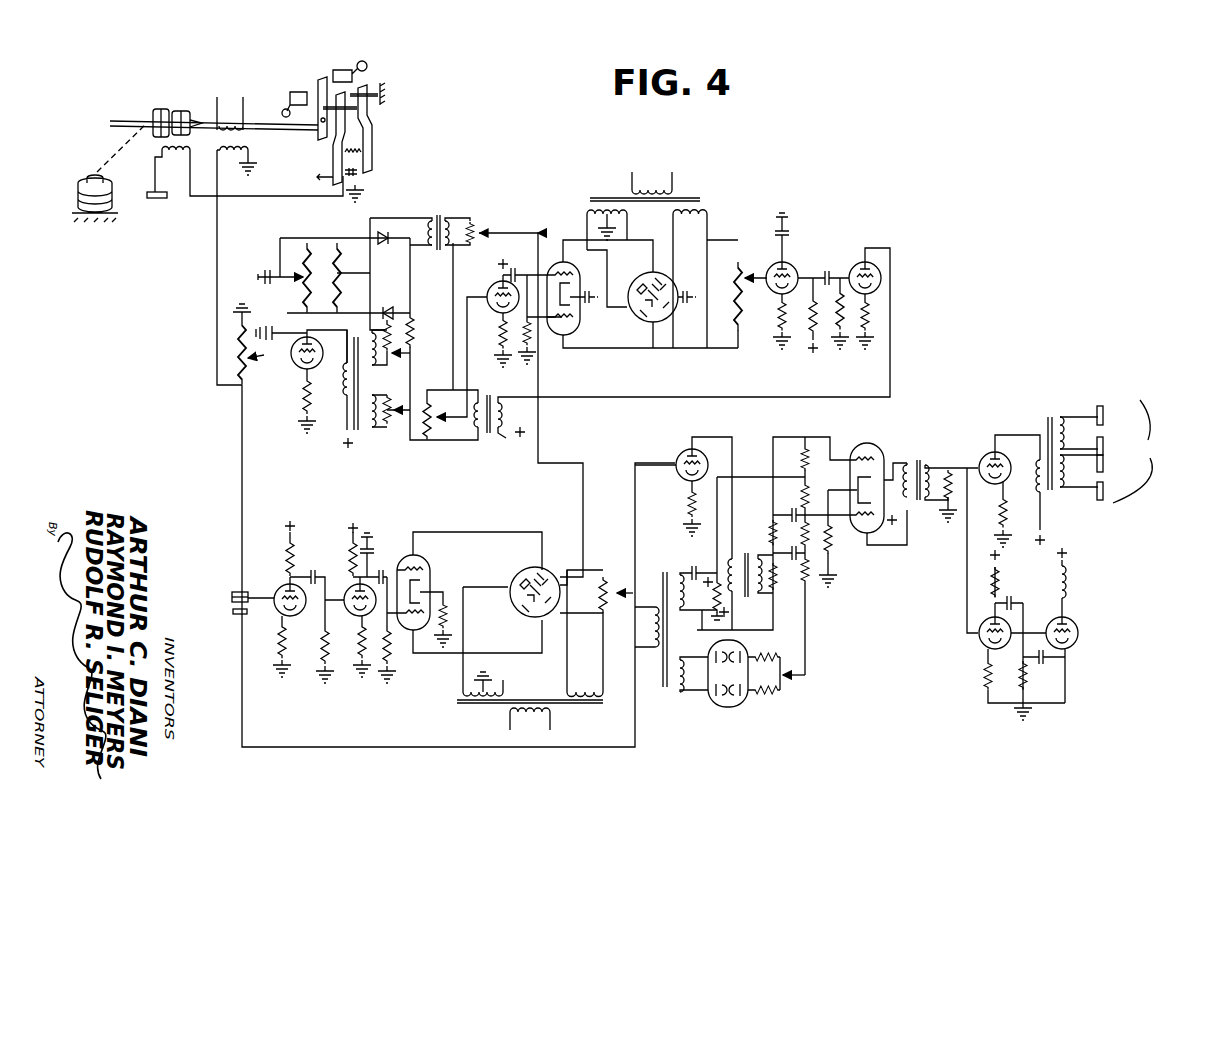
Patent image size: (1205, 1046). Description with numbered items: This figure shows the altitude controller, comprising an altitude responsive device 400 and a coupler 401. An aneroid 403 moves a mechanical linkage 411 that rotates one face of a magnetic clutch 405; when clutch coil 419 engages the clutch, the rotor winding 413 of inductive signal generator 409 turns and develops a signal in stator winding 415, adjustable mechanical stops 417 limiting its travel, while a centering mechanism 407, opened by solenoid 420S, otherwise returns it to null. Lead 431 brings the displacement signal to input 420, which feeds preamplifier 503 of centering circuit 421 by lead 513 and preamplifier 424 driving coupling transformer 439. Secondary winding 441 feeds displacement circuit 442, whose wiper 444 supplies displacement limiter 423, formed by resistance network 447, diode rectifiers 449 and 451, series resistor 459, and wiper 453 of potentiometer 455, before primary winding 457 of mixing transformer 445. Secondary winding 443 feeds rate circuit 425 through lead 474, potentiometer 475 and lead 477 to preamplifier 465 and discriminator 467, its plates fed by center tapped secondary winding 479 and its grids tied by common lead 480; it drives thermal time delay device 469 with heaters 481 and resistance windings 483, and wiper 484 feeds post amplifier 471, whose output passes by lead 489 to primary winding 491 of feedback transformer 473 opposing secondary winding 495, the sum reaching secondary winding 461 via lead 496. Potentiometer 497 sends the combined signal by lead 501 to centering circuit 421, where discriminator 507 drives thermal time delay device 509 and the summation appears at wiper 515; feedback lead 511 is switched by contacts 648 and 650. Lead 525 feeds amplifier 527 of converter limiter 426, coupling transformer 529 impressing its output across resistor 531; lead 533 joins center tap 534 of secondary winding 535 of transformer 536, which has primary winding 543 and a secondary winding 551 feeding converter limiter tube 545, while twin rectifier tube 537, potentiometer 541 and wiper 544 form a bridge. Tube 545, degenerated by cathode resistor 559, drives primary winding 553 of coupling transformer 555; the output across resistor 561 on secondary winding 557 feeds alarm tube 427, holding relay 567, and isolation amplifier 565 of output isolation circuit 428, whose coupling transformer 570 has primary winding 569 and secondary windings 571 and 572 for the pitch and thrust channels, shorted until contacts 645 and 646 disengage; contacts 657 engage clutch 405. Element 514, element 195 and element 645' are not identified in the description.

The tuning mechanism assembly 400 is at (237, 84).
The oscillator and amplifier circuit 401 is at (744, 174).
The knob 403 is at (72, 174).
The friction drive 405 is at (173, 109).
The switch arm 407 is at (372, 135).
The coil 409 is at (243, 136).
The shaft 411 is at (112, 147).
The motor winding 413 is at (250, 110).
The winding 415 is at (249, 154).
The armature 417 is at (345, 68).
The winding 419 is at (162, 164).
The potentiometer 420 is at (238, 360).
The switch contact 420S is at (358, 176).
The amplifier stage 421 is at (467, 528).
The rectifier bridge 423 is at (356, 236).
The tube 424 is at (300, 375).
The oscillator 425 is at (615, 351).
The voltage divider network 426 is at (835, 442).
The output tube pair 427 is at (1035, 608).
The output stage 428 is at (1022, 401).
The lead 431 is at (214, 279).
The capacitor 439 is at (374, 327).
The resistor 441 is at (390, 342).
The lead 442 is at (406, 290).
The transformer 443 is at (376, 393).
The wiper 444 is at (420, 350).
The transformer 445 is at (451, 217).
The resistor 447 is at (333, 312).
The diode 449 is at (390, 252).
The diode 451 is at (395, 310).
The capacitor 453 is at (280, 288).
The potentiometer 455 is at (325, 278).
The primary winding 457 is at (432, 224).
The resistor 459 is at (426, 339).
The secondary winding 461 is at (460, 227).
The tube 465 is at (496, 283).
The tube 467 is at (577, 298).
The tube 469 is at (648, 272).
The amplifier tubes 471 is at (843, 259).
The transformer 473 is at (511, 390).
The lead 474 is at (428, 440).
The potentiometer 475 is at (440, 387).
The lead 477 is at (468, 357).
The transformer 479 is at (590, 213).
The capacitor 480 is at (525, 253).
The capacitor 481 is at (641, 310).
The capacitor 483 is at (682, 310).
The potentiometer 484 is at (765, 260).
The lead 489 is at (765, 386).
The secondary winding 491 is at (506, 439).
The primary winding 495 is at (478, 433).
The lead 496 is at (450, 282).
The potentiometer 497 is at (481, 226).
The lead 501 is at (576, 455).
The capacitor 503 is at (344, 558).
The tube 507 is at (428, 573).
The tube 509 is at (517, 573).
The transformer 511 is at (444, 747).
The lead 513 is at (240, 499).
The tube 514 is at (260, 595).
The potentiometer 515 is at (609, 578).
The lead 525 is at (635, 520).
The tube 527 is at (675, 454).
The transformer 529 is at (746, 581).
The resistor 531 is at (791, 562).
The lead 533 is at (721, 634).
The winding 534 is at (684, 674).
The winding 535 is at (672, 695).
The transformer 536 is at (688, 564).
The rectifier tube 537 is at (744, 685).
The potentiometer 541 is at (785, 681).
The lead 543 is at (645, 624).
The wiper 544 is at (790, 670).
The tube 545 is at (886, 458).
The winding 551 is at (690, 621).
The winding 553 is at (943, 503).
The transformer 555 is at (940, 472).
The resistor 557 is at (951, 480).
The resistor 559 is at (835, 556).
The lead 561 is at (953, 492).
The tube 565 is at (992, 450).
The choke 567 is at (1070, 591).
The primary winding 569 is at (1043, 494).
The transformer 570 is at (1053, 413).
The secondary winding 571 is at (1068, 433).
The secondary winding 572 is at (1068, 468).
The lead 195 is at (1063, 414).
The electrode 645 is at (1123, 409).
The electrode 645' is at (210, 633).
The electrode 646 is at (1121, 490).
The crystal 648 is at (233, 607).
The crystal holder 650 is at (236, 595).
The contact 657 is at (150, 198).